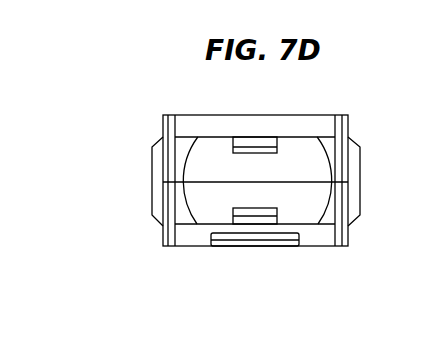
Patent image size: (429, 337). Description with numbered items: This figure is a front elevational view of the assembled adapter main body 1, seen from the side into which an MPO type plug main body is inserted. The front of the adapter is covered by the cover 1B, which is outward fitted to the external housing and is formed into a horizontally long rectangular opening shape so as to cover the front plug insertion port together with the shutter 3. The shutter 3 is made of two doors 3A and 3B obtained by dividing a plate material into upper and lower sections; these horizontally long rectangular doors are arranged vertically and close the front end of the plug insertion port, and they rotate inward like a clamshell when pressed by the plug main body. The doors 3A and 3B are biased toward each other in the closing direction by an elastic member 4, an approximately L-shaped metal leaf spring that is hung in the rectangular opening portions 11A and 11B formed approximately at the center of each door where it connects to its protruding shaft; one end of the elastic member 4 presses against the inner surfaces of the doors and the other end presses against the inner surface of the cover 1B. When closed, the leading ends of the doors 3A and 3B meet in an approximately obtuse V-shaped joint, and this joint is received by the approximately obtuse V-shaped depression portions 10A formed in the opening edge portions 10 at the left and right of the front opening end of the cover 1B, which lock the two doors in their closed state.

The adapter main body 1 is at (327, 102).
The cover 1B is at (330, 117).
The shutter 3 is at (199, 146).
The door 3A is at (215, 148).
The door 3B is at (217, 203).
The elastic member 4 is at (255, 142).
The opening edge portion 10 is at (180, 213).
The depression portion 10A is at (183, 209).
The opening portion 11A is at (260, 150).
The opening portion 11B is at (263, 221).